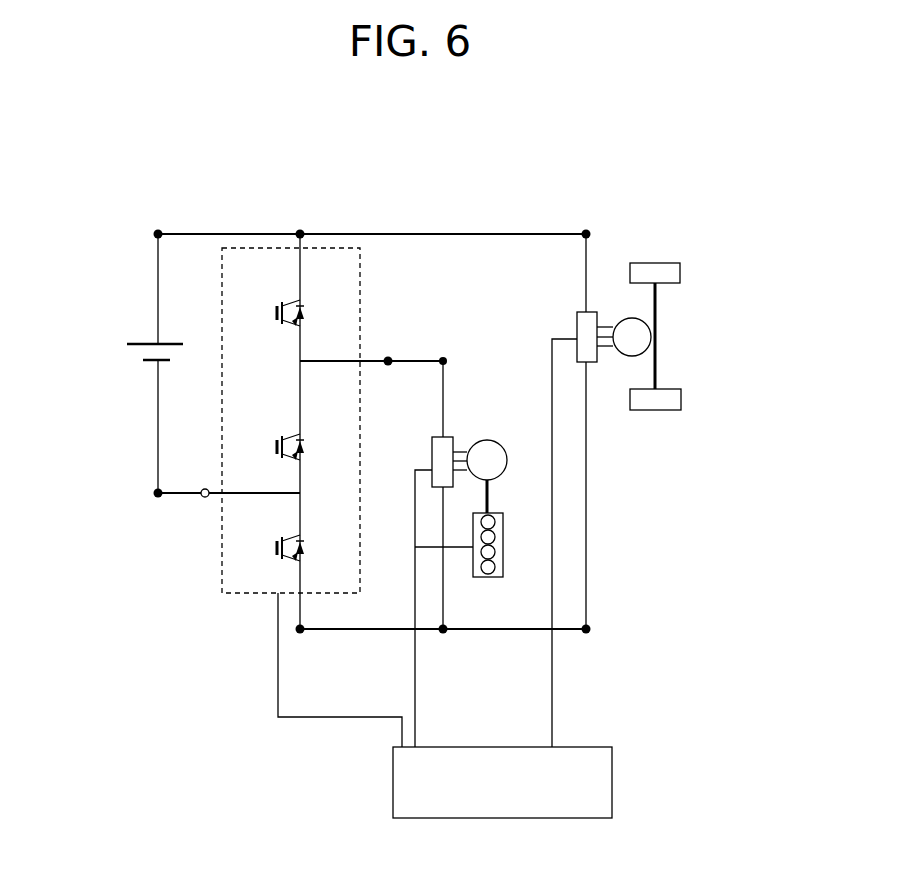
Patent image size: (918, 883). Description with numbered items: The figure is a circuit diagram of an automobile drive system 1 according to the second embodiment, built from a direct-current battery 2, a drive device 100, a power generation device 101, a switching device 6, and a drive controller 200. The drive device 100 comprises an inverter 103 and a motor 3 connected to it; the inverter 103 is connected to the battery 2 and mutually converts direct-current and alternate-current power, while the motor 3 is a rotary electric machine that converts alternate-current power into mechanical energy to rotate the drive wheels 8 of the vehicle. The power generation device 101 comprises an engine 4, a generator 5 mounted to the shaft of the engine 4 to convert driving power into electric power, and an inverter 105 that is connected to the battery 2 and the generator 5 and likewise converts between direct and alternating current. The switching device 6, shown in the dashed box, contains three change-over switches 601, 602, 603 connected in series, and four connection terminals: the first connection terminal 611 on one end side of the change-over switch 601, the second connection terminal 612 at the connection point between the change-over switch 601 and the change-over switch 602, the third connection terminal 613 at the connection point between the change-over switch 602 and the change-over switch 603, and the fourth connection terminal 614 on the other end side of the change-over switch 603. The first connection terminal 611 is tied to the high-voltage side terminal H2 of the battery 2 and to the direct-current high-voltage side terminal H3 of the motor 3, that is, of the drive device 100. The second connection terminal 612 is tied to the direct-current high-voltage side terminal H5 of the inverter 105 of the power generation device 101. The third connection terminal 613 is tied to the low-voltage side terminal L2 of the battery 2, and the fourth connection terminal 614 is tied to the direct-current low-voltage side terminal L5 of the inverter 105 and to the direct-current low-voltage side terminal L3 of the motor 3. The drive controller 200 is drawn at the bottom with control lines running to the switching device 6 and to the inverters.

The automobile drive system 1 is at (122, 108).
The direct-current battery 2 is at (150, 344).
The motor 3 is at (622, 322).
The engine 4 is at (488, 578).
The generator 5 is at (443, 480).
The switching device 6 is at (240, 250).
The drive wheels 8 is at (657, 303).
The drive device 100 is at (522, 150).
The power generation device 101 is at (670, 485).
The inverter 103 is at (578, 312).
The inverter 105 is at (507, 464).
The drive controller 200 is at (612, 747).
The change-over switch 601 is at (274, 296).
The change-over switch 602 is at (273, 456).
The change-over switch 603 is at (280, 562).
The first connection terminal 611 is at (300, 234).
The second connection terminal 612 is at (388, 317).
The third connection terminal 613 is at (205, 493).
The fourth connection terminal 614 is at (300, 632).
The high-voltage side terminal H2 is at (158, 234).
The low-voltage side terminal L2 is at (156, 493).
The direct-current high-voltage side terminal H3 is at (586, 234).
The direct-current low-voltage side terminal L3 is at (590, 629).
The direct-current high-voltage side terminal H5 is at (443, 361).
The direct-current low-voltage side terminal L5 is at (443, 632).